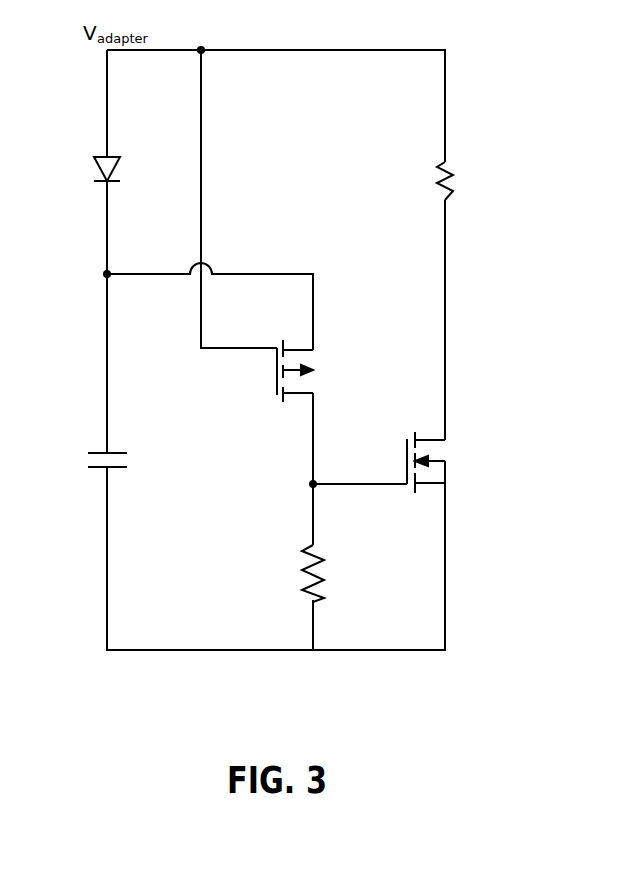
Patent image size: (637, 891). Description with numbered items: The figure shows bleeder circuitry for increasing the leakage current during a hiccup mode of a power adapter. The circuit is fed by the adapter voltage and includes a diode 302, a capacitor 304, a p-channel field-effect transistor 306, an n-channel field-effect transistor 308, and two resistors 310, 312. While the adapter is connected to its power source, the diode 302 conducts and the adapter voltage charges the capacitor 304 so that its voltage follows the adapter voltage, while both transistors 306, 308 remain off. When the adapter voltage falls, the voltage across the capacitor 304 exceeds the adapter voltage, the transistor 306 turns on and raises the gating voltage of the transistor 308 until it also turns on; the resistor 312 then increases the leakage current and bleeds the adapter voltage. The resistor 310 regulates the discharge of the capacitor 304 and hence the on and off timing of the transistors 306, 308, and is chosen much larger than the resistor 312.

The diode 302 is at (86, 169).
The capacitor 304 is at (84, 460).
The p-channel field-effect transistor 306 is at (319, 371).
The n-channel field-effect transistor 308 is at (450, 462).
The resistor 310 is at (336, 573).
The resistor 312 is at (468, 181).